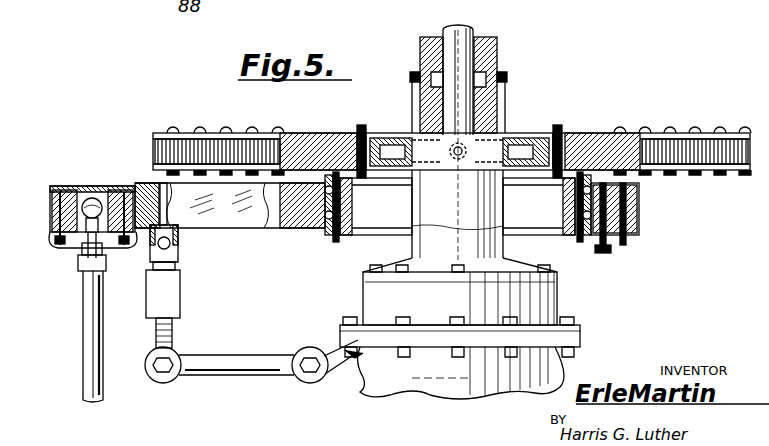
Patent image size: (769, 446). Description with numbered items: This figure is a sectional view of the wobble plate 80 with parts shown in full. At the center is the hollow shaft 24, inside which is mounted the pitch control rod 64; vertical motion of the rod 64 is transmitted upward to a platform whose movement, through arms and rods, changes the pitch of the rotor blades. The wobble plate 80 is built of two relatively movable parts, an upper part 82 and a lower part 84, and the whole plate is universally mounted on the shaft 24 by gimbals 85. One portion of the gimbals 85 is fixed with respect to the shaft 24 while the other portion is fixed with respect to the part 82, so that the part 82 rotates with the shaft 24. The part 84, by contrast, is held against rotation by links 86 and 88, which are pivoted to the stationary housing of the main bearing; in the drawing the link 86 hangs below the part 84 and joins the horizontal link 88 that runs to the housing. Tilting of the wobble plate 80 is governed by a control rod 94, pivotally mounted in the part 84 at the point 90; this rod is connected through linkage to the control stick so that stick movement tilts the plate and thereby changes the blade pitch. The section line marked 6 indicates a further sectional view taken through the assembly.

The section line 6- 6 is at (135, 408).
The hollow shaft 24 is at (487, 54).
The pitch control rod 64 is at (471, 32).
The wobble plate 80 is at (665, 125).
The rotatable part of wobble plate 82 is at (242, 133).
The non-rotating part of wobble plate 84 is at (250, 230).
The gimbals 85 is at (526, 133).
The link 86 is at (181, 296).
The link 88 is at (230, 358).
The pivotal mounting 90 is at (92, 188).
The control rod 94 is at (88, 363).